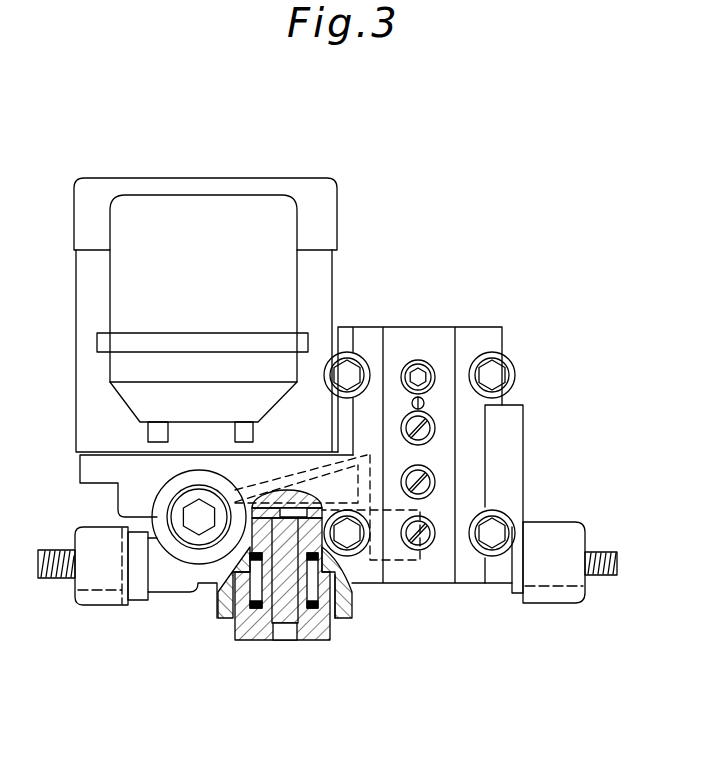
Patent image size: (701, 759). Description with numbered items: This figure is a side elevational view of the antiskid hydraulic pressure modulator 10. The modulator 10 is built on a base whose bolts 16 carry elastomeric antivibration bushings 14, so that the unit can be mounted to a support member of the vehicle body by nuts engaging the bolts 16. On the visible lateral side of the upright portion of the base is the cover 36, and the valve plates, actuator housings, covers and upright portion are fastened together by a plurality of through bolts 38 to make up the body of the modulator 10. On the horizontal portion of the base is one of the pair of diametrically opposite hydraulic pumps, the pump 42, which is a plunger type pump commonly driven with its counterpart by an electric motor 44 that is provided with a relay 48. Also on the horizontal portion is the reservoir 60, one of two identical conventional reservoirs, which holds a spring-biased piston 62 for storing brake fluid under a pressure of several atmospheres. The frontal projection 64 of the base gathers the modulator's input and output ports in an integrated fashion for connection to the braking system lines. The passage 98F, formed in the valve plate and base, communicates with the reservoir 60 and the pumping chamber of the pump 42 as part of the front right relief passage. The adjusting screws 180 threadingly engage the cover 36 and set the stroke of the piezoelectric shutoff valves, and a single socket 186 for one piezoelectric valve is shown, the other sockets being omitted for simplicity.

The antiskid hydraulic pressure modulator 10 is at (516, 218).
The elastomeric antivibration bushings 14 is at (570, 541).
The bolts 16 is at (610, 577).
The cover 36 is at (425, 331).
The through bolts 38 is at (492, 370).
The hydraulic pump 42 is at (197, 523).
The electric motor 44 is at (320, 266).
The relay 48 is at (265, 213).
The reservoir 60 is at (268, 648).
The spring-biased piston 62 is at (282, 622).
The frontal projection 64 is at (524, 514).
The passage 98F is at (345, 600).
The adjusting screw 180 is at (430, 436).
The socket 186 is at (424, 404).